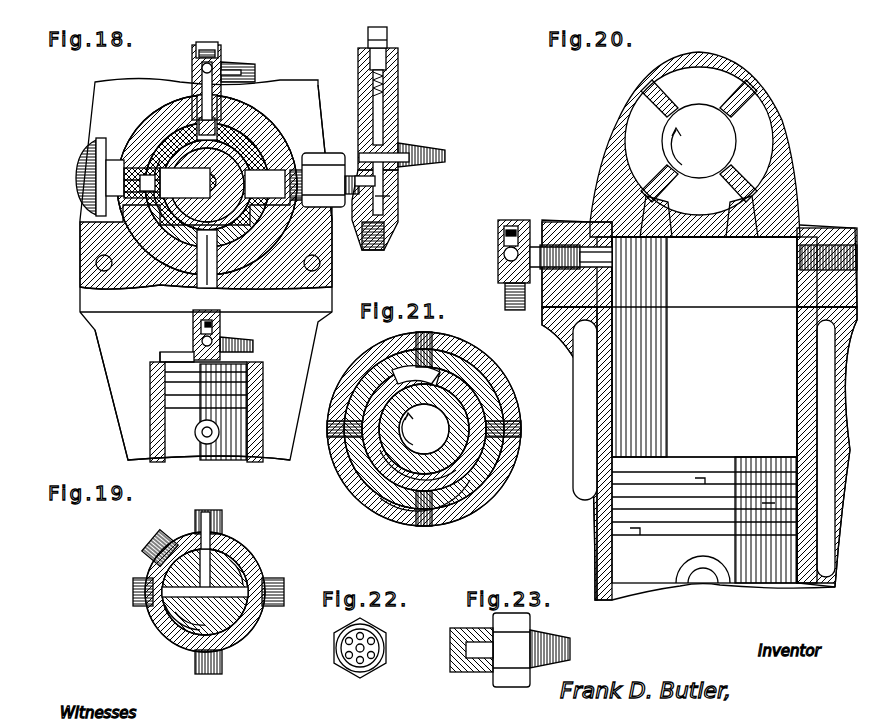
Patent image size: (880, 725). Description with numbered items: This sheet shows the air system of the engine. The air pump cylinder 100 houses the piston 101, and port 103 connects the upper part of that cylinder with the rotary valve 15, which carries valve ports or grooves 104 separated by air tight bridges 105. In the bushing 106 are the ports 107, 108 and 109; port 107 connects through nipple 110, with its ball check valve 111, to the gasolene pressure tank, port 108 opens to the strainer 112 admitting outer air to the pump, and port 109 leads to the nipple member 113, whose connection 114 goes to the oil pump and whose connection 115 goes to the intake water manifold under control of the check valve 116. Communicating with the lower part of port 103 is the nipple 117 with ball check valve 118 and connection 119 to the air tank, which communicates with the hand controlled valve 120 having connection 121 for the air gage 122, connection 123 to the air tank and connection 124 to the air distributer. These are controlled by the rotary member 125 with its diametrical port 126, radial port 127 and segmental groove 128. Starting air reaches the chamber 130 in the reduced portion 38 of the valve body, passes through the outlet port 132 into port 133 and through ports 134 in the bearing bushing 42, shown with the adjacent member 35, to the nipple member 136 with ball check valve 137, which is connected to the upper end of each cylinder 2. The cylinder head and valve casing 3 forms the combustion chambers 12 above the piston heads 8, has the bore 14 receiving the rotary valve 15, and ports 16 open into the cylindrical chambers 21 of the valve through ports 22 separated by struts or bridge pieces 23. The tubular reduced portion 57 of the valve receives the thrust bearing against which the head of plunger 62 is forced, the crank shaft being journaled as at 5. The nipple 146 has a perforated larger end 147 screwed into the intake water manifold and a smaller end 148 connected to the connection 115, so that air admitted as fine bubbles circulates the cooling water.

In FIG. 18, the cylinders 2 is at (118, 428).
In FIG. 20, the cylinders 2 is at (612, 530).
In FIG. 20, the cylinder heads and rotary valve casing 3 is at (800, 185).
In FIG. 18, the journal 5 is at (80, 258).
In FIG. 20, the piston heads 8 is at (716, 460).
In FIG. 20, the combustion chambers 12 is at (704, 347).
In FIG. 20, the bore 14 is at (718, 60).
In FIG. 20, the rotary valve 15 is at (722, 102).
In FIG. 20, the ports 16 is at (745, 240).
In FIG. 20, the cylindrical chambers 21 is at (663, 141).
In FIG. 20, the ports 22 is at (655, 145).
In FIG. 20, the struts or bridge pieces 23 is at (775, 125).
In FIG. 21, the valve sleeve 35 is at (492, 482).
In FIG. 21, the reduced portion 38 is at (485, 458).
In FIG. 21, the bearing bushing 42 is at (470, 498).
In FIG. 18, the reduced portion 57 is at (318, 84).
In FIG. 18, the plunger 62 is at (205, 285).
In FIG. 18, the cylinder wall 100 is at (152, 400).
In FIG. 18, the piston 101 is at (202, 422).
In FIG. 18, the port 103 is at (212, 290).
In FIG. 18, the valve ports or grooves 104 is at (218, 130).
In FIG. 18, the air tight bridges 105 is at (182, 112).
In FIG. 18, the bushing 106 is at (160, 135).
In FIG. 18, the port 107 is at (228, 125).
In FIG. 18, the port 108 is at (178, 152).
In FIG. 18, the port 109 is at (292, 165).
In FIG. 18, the nipple 110 is at (192, 70).
In FIG. 18, the ball check valve 111 is at (225, 62).
In FIG. 18, the strainer 112 is at (82, 150).
In FIG. 18, the nipple member 113 is at (355, 158).
In FIG. 18, the connection 114 is at (384, 206).
In FIG. 18, the connection 115 is at (402, 150).
In FIG. 18, the check valve 116 is at (398, 110).
In FIG. 18, the nipple 117 is at (222, 325).
In FIG. 18, the ball check valve 118 is at (193, 340).
In FIG. 18, the connection 119 is at (254, 342).
In FIG. 19, the connection 119 is at (133, 592).
In FIG. 19, the hand controlled valve 120 is at (248, 625).
In FIG. 19, the connection 121 is at (222, 520).
In FIG. 19, the air gage connection 122 is at (152, 538).
In FIG. 19, the connection 123 is at (275, 606).
In FIG. 19, the connection 124 is at (222, 665).
In FIG. 19, the rotary member 125 is at (185, 625).
In FIG. 19, the diametrical port 126 is at (175, 606).
In FIG. 19, the radial port 127 is at (210, 548).
In FIG. 19, the segmental groove 128 is at (240, 570).
In FIG. 21, the chamber 130 is at (520, 450).
In FIG. 21, the outlet port 132 is at (478, 380).
In FIG. 21, the port 133 is at (455, 365).
In FIG. 21, the ports 134 is at (358, 492).
In FIG. 20, the nipple member 136 is at (498, 270).
In FIG. 20, the ball check valve 137 is at (498, 247).
In FIG. 22, the nipple 146 is at (384, 640).
In FIG. 23, the nipple 146 is at (515, 688).
In FIG. 22, the larger end 147 is at (350, 678).
In FIG. 23, the larger end 147 is at (468, 672).
In FIG. 23, the smaller end 148 is at (572, 644).